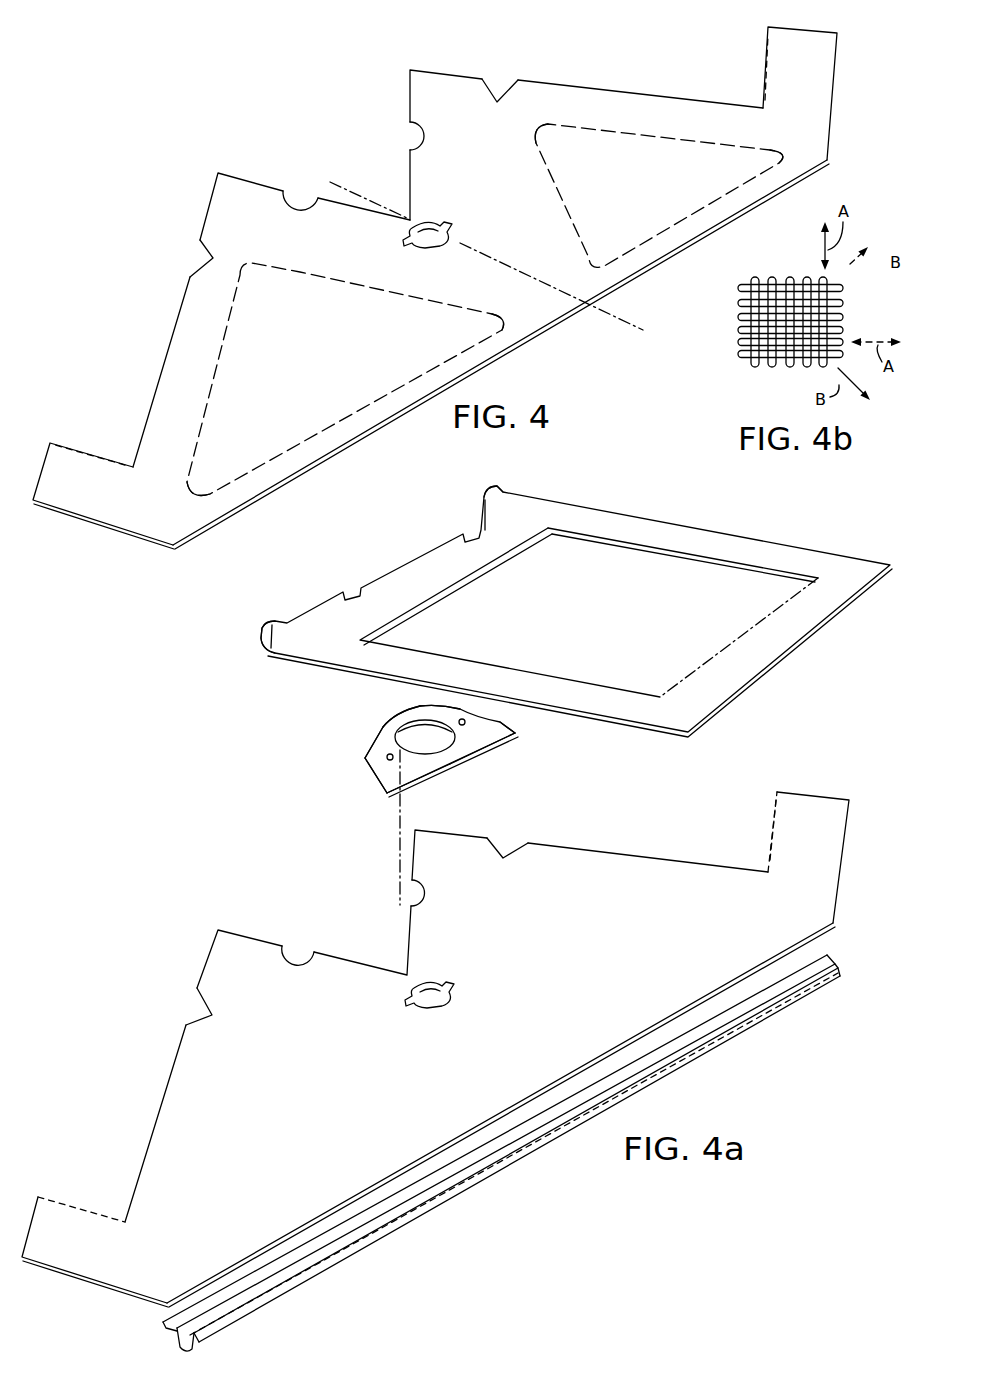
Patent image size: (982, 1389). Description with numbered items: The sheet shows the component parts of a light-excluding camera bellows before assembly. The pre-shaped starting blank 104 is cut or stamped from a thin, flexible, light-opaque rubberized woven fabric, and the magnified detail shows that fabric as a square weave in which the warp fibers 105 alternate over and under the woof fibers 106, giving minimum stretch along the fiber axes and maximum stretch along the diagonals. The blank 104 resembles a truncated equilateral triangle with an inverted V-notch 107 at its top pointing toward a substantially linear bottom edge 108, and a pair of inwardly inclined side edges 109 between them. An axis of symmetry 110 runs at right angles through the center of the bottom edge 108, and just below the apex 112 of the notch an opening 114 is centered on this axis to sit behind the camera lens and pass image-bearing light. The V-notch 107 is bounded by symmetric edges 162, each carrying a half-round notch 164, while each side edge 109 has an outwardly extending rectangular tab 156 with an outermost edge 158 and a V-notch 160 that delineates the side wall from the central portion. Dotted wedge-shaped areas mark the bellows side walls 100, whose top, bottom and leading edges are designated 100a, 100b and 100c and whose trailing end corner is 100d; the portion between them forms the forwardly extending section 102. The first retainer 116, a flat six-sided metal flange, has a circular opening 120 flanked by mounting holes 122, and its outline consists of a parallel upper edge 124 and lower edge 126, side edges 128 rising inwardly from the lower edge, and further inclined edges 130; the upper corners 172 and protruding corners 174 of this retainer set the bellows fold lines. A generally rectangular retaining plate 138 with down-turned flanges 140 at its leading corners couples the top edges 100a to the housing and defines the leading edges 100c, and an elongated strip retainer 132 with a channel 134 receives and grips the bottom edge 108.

In FIG. 4, the bellows side walls 100 is at (661, 201).
In FIG. 4, the top edge of side wall 100a is at (649, 135).
In FIG. 4, the bottom edge of side wall 100b is at (607, 268).
In FIG. 4, the leading edge of side wall 100c is at (560, 195).
In FIG. 4, the trailing end corner of side wall 100d is at (782, 155).
In FIG. 4, the forwardly extending section 102 is at (519, 216).
In FIG. 4, the pre-shaped starting blank 104 is at (206, 169).
In FIG. 4b, the warp fibers 105 is at (752, 277).
In FIG. 4b, the woof fibers 106 is at (845, 300).
In FIG. 4, the inverted V-notch 107 is at (349, 122).
In FIG. 4a, the bottom edge 108 is at (497, 1105).
In FIG. 4, the inclined side edges 109 is at (600, 90).
In FIG. 4a, the inclined side edges 109 is at (620, 856).
In FIG. 4, the axis of symmetry 110 is at (617, 322).
In FIG. 4, the apex of notch 112 is at (405, 216).
In FIG. 4, the opening 114 is at (430, 226).
In FIG. 4a, the opening 114 is at (428, 986).
In FIG. 4a, the first retainer 116 is at (480, 748).
In FIG. 4a, the circular opening 120 is at (442, 741).
In FIG. 4a, the mounting holes 122 is at (380, 782).
In FIG. 4a, the upper edge 124 is at (397, 717).
In FIG. 4a, the lower edge 126 is at (440, 776).
In FIG. 4a, the side edges 128 is at (516, 733).
In FIG. 4a, the inclined edges 130 is at (440, 705).
In FIG. 4a, the retainer 132 is at (457, 1109).
In FIG. 4a, the channel 134 is at (867, 961).
In FIG. 4a, the retaining plate 138 is at (550, 495).
In FIG. 4a, the flanges 140 is at (487, 486).
In FIG. 4, the rectangular tab 156 is at (748, 62).
In FIG. 4a, the rectangular tab 156 is at (795, 822).
In FIG. 4, the outermost edge 158 is at (768, 27).
In FIG. 4a, the outermost edge 158 is at (790, 792).
In FIG. 4, the V-notch 160 is at (498, 96).
In FIG. 4a, the V-notch 160 is at (505, 852).
In FIG. 4, the edges 162 is at (409, 70).
In FIG. 4a, the edges 162 is at (225, 928).
In FIG. 4, the half-round notch 164 is at (418, 137).
In FIG. 4a, the half-round notch 164 is at (415, 893).
In FIG. 4a, the upper corners 172 is at (413, 708).
In FIG. 4a, the protruding corners 174 is at (462, 717).